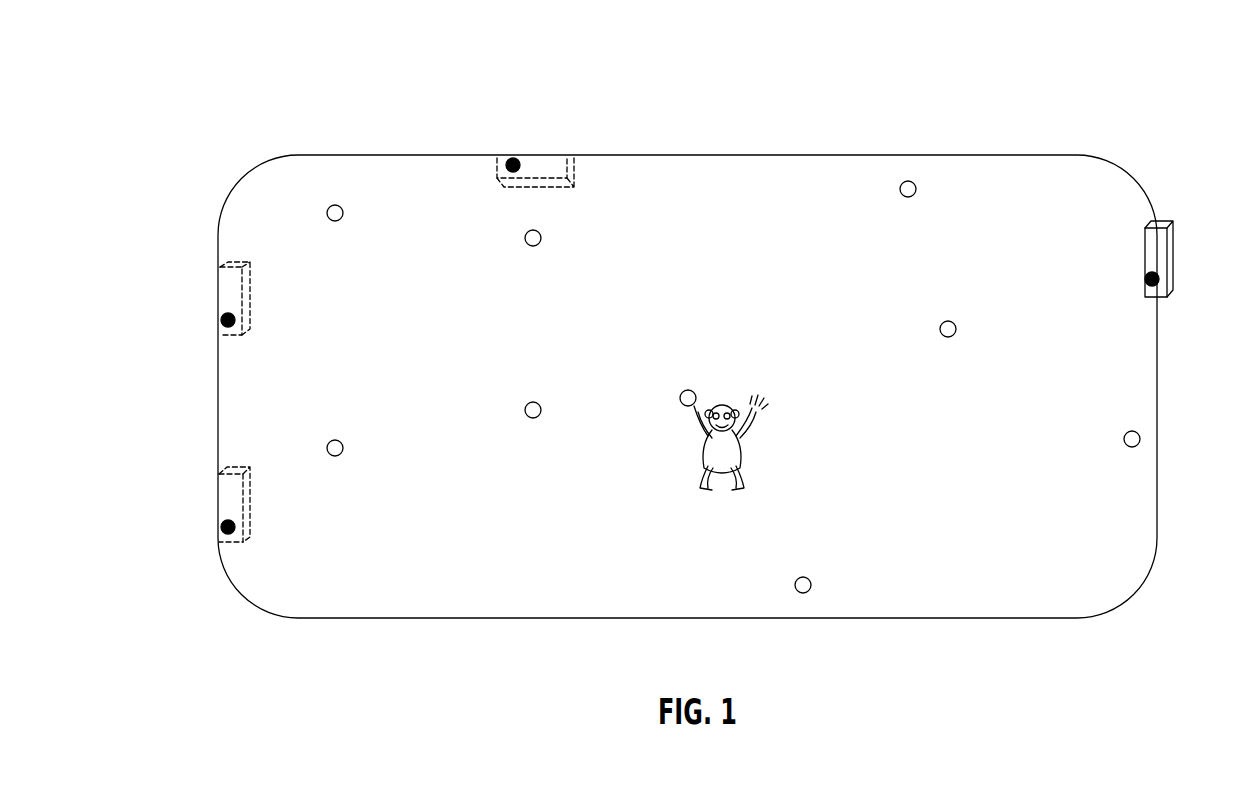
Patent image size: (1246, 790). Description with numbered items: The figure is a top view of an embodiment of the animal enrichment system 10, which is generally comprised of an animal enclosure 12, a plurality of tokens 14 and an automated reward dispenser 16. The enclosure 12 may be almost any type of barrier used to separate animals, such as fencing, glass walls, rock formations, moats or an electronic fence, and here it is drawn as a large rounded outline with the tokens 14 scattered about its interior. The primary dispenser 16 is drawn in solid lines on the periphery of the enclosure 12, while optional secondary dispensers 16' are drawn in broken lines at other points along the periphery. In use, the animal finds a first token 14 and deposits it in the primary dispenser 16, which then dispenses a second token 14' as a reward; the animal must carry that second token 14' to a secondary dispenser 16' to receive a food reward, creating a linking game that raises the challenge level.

The animal enrichment system 10 is at (1116, 120).
The animal enclosure 12 is at (259, 172).
The tokens 14 is at (733, 253).
The second token 14' is at (520, 537).
The automated reward dispenser 16 is at (1181, 238).
The secondary dispenser 16' is at (363, 292).